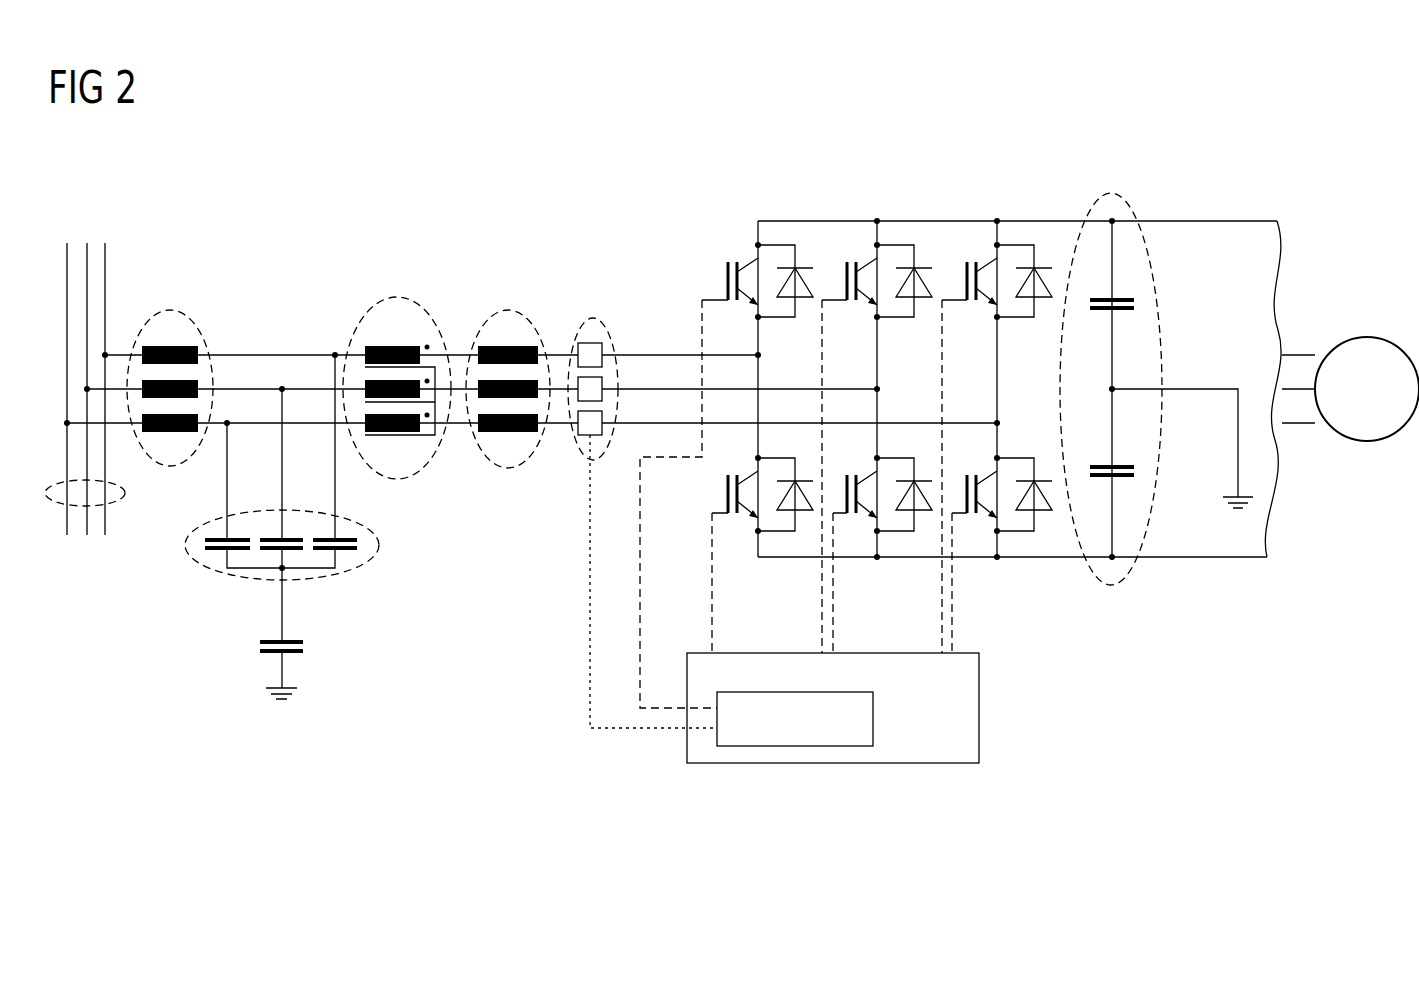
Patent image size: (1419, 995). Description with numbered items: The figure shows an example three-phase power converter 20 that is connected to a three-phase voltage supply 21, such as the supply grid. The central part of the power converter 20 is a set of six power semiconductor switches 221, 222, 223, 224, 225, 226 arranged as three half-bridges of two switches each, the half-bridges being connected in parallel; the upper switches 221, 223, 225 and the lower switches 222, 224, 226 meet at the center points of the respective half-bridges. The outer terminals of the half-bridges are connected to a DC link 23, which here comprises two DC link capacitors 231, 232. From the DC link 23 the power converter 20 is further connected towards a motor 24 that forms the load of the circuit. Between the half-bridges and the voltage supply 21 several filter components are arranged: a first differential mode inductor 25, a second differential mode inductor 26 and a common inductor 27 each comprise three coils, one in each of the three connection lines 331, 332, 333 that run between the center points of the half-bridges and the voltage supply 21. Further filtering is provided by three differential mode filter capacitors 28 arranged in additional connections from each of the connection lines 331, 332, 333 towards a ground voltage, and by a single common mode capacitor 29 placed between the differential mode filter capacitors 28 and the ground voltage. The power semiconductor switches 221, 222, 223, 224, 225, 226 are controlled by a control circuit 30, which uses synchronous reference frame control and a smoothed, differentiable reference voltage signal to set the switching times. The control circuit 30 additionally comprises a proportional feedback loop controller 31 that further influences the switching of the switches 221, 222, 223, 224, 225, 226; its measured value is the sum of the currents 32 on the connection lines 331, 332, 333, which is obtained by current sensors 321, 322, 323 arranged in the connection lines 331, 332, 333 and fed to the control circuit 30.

The three-phase power converter 20 is at (977, 393).
The three-phase voltage supply 21 is at (120, 495).
The DC link 23 is at (1156, 354).
The motor 24 is at (1364, 338).
The first differential mode inductor 25 is at (508, 310).
The second differential mode inductor 26 is at (170, 310).
The common inductor 27 is at (397, 297).
The differential mode filter capacitors 28 is at (378, 537).
The common mode capacitor 29 is at (300, 641).
The control circuit 30 is at (833, 746).
The proportional feedback loop controller 31 is at (800, 746).
The sum of the currents 32 is at (642, 493).
The power semiconductor switch 221 is at (782, 245).
The power semiconductor switch 222 is at (773, 540).
The power semiconductor switch 223 is at (901, 245).
The power semiconductor switch 224 is at (892, 540).
The power semiconductor switch 225 is at (1021, 245).
The power semiconductor switch 226 is at (1012, 540).
The DC link capacitor 231 is at (1134, 302).
The DC link capacitor 232 is at (1134, 470).
The current sensor 321 is at (604, 347).
The current sensor 322 is at (604, 382).
The current sensor 323 is at (604, 418).
The connection line 331 is at (303, 354).
The connection line 332 is at (240, 388).
The connection line 333 is at (247, 425).